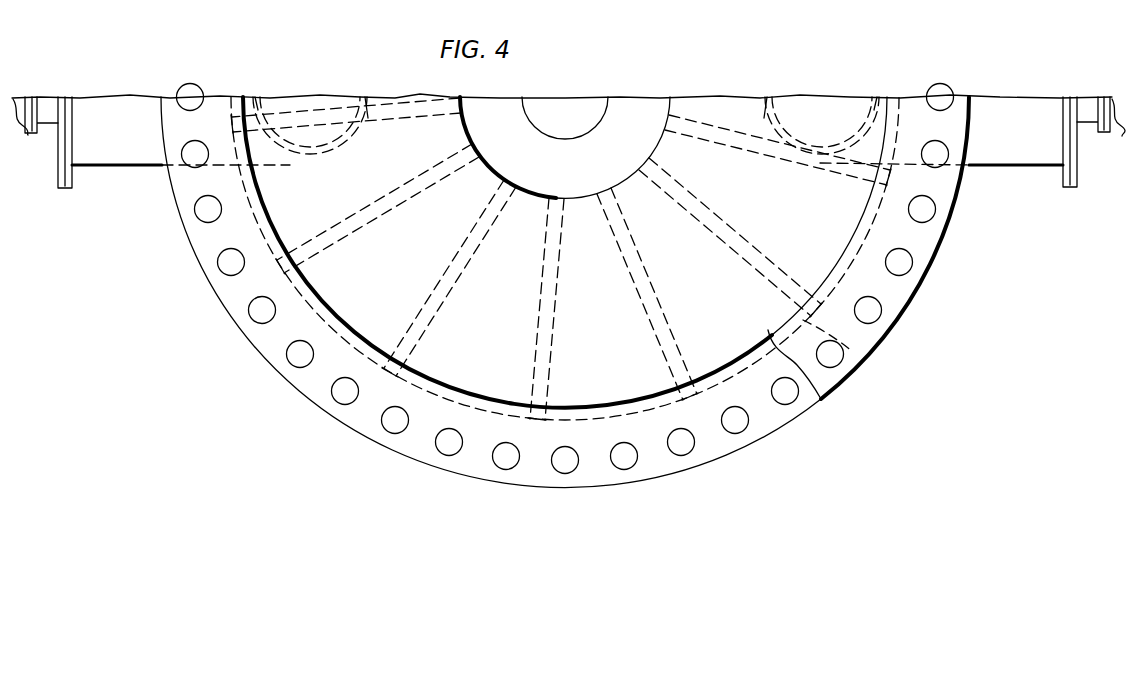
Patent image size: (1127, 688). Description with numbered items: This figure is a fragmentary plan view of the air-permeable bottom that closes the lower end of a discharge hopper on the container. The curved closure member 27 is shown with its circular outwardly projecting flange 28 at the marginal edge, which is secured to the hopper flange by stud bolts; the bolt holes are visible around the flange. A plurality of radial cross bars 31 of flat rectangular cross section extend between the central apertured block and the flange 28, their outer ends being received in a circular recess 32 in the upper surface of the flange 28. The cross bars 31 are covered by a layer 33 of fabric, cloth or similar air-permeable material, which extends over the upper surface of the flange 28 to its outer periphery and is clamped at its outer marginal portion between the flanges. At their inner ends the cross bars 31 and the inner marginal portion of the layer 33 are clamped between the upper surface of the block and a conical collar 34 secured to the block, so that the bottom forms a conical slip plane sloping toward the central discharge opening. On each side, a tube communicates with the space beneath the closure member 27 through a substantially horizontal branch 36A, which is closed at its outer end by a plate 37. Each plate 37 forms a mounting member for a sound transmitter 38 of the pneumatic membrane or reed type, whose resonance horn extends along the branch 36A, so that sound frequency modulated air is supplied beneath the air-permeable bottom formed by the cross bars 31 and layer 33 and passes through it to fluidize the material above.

The curved closure member 27 is at (323, 414).
The circular outwardly projecting flange 28 is at (717, 447).
The radial cross bars 31 is at (550, 324).
The circular recess 32 is at (857, 357).
The layer of air-permeable material 33 is at (818, 398).
The conical collar 34 is at (627, 173).
The horizontal branch 36A is at (1010, 178).
The plate 37 is at (1068, 199).
The sound transmitter 38 is at (1111, 148).